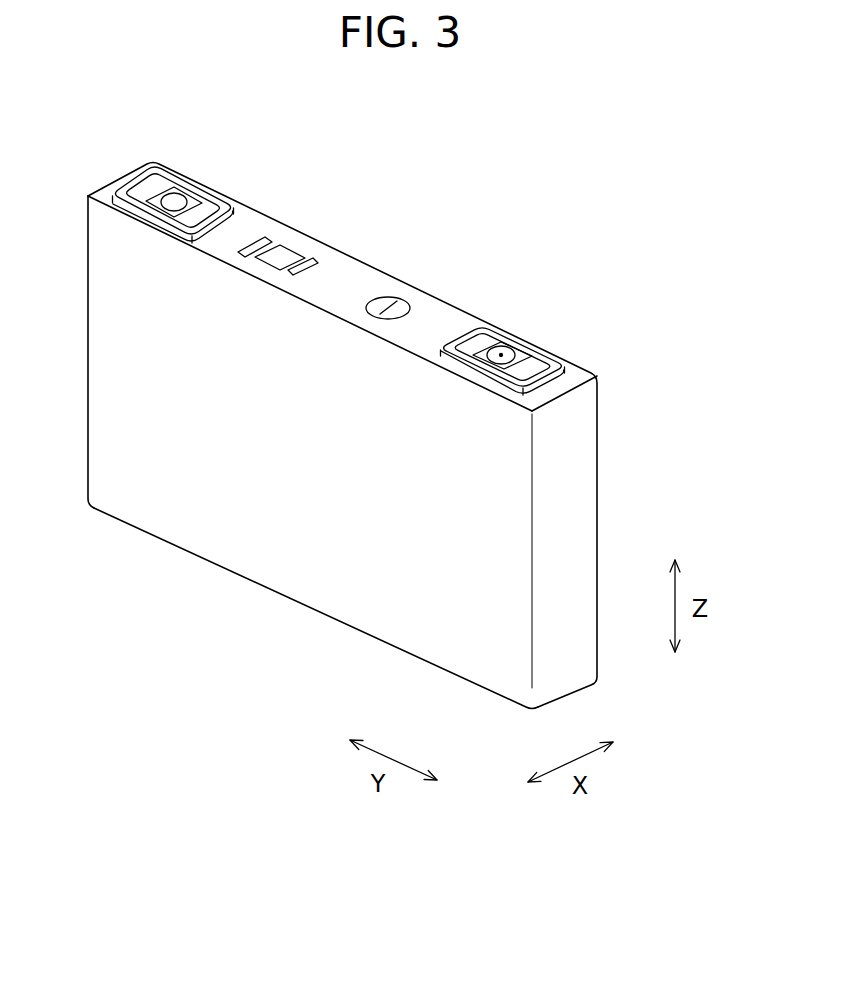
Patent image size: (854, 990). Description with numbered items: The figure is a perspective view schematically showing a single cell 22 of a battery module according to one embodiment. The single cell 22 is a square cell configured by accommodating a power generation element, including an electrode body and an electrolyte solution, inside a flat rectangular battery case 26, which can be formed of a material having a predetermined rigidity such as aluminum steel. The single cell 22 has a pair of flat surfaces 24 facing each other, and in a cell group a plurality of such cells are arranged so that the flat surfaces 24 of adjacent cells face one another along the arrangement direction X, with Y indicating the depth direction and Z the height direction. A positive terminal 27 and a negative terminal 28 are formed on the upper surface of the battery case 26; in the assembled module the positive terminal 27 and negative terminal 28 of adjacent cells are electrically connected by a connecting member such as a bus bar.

The single cell 22 is at (594, 152).
The flat surface 24 is at (253, 535).
The battery case 26 is at (356, 577).
The positive terminal 27 is at (183, 197).
The negative terminal 28 is at (510, 350).